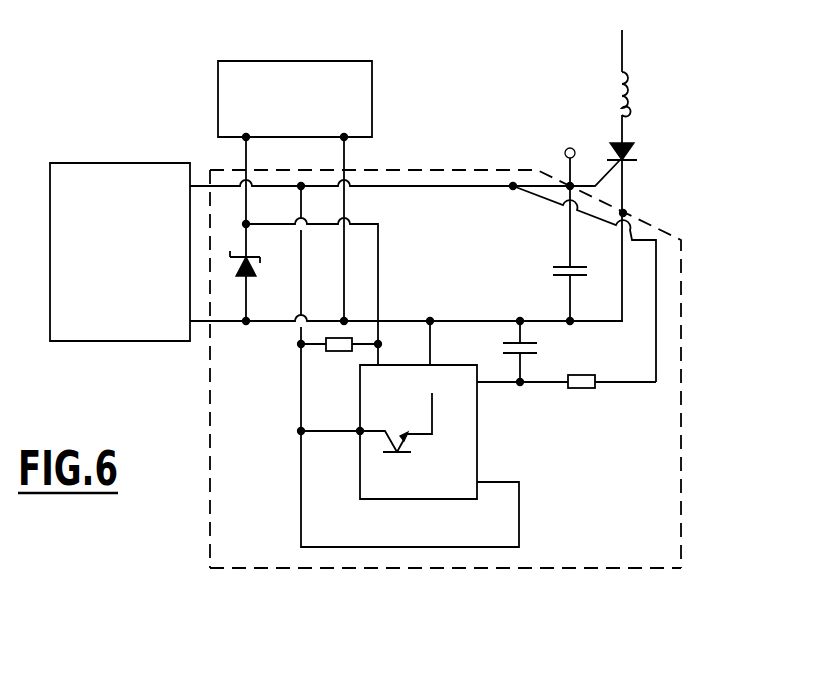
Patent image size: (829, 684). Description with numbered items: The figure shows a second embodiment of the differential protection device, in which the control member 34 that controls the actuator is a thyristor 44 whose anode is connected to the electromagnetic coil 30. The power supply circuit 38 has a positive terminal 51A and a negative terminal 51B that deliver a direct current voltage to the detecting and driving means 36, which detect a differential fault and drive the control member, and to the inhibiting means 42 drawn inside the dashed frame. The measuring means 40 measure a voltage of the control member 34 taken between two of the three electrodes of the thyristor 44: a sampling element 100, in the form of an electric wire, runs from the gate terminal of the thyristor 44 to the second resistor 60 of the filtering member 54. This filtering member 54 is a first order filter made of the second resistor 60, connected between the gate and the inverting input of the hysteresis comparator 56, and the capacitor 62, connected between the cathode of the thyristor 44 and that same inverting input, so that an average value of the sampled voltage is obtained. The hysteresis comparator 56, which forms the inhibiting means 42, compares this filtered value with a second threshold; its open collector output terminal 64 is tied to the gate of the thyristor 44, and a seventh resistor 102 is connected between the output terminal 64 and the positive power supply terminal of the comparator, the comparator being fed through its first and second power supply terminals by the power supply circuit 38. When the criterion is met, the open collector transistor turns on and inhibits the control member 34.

The electromagnetic coil 30 is at (636, 114).
The control member 34 is at (578, 114).
The detecting and driving means 36 is at (97, 341).
The power supply circuit 38 is at (365, 97).
The measuring means 40 is at (665, 332).
The inhibiting means 42 is at (268, 530).
The thyristor 44 is at (633, 152).
The positive terminal 51A is at (244, 138).
The negative terminal 51B is at (346, 139).
The filtering member 54 is at (626, 390).
The hysteresis comparator 56 is at (490, 470).
The second resistor 60 is at (573, 389).
The capacitor 62 is at (535, 347).
The output terminal 64 is at (357, 434).
The sampling element 100 is at (657, 297).
The seventh resistor 102 is at (343, 352).